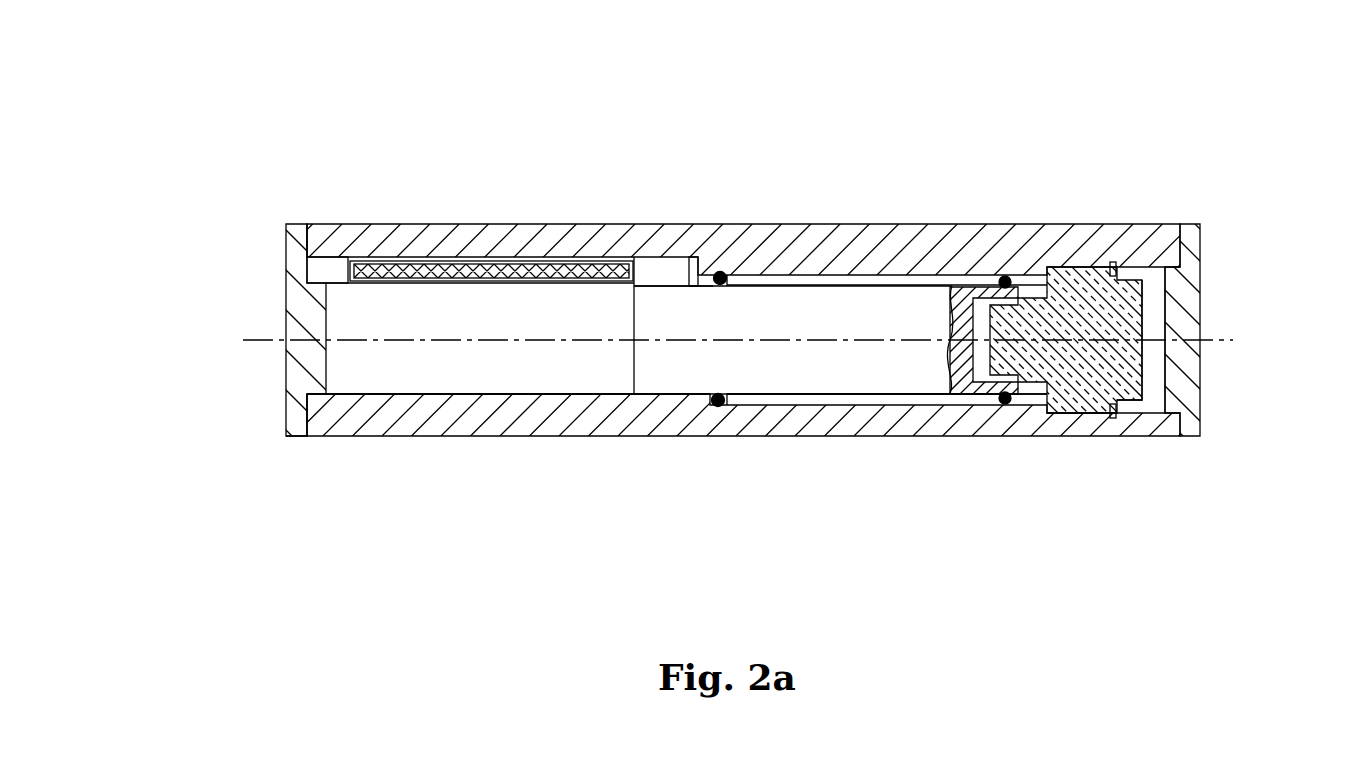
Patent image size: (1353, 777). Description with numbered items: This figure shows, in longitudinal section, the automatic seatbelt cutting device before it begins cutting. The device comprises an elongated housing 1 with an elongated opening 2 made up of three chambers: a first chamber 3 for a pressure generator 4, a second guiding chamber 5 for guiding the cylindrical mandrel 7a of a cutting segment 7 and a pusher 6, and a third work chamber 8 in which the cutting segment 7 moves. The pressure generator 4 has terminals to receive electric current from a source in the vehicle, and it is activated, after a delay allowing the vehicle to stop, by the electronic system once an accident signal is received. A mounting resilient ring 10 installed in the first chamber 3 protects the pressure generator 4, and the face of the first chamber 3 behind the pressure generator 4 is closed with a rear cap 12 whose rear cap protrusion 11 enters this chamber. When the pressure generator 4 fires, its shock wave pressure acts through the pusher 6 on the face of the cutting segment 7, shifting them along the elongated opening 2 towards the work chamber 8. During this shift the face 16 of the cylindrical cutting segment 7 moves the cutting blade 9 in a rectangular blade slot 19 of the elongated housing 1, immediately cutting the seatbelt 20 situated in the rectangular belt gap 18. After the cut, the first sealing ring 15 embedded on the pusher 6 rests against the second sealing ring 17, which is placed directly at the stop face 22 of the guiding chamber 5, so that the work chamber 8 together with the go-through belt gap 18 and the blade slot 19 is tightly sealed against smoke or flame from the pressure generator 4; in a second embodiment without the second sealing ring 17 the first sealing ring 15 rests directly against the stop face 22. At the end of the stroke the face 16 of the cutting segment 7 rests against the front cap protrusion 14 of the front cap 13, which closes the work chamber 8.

The elongated housing 1 is at (380, 420).
The elongated opening 2 is at (1068, 413).
The first chamber 3 is at (1070, 265).
The pressure generator 4 is at (1117, 298).
The guiding chamber 5 is at (846, 278).
The pusher 6 is at (970, 280).
The cutting segment 7 is at (686, 262).
The cylindrical mandrel 7a is at (695, 312).
The work chamber 8 is at (368, 397).
The cutting blade 9 is at (660, 283).
The mounting resilient ring 10 is at (1137, 400).
The rear cap protrusion 11 is at (1162, 400).
The rear cap 12 is at (1185, 292).
The front cap 13 is at (297, 385).
The front cap protrusion 14 is at (292, 340).
The first sealing ring 15 is at (1007, 281).
The face 16 is at (632, 307).
The second sealing ring 17 is at (735, 270).
The belt gap 18 is at (352, 257).
The blade slot 19 is at (330, 272).
The seatbelt 20 is at (560, 265).
The stop face 22 is at (724, 272).